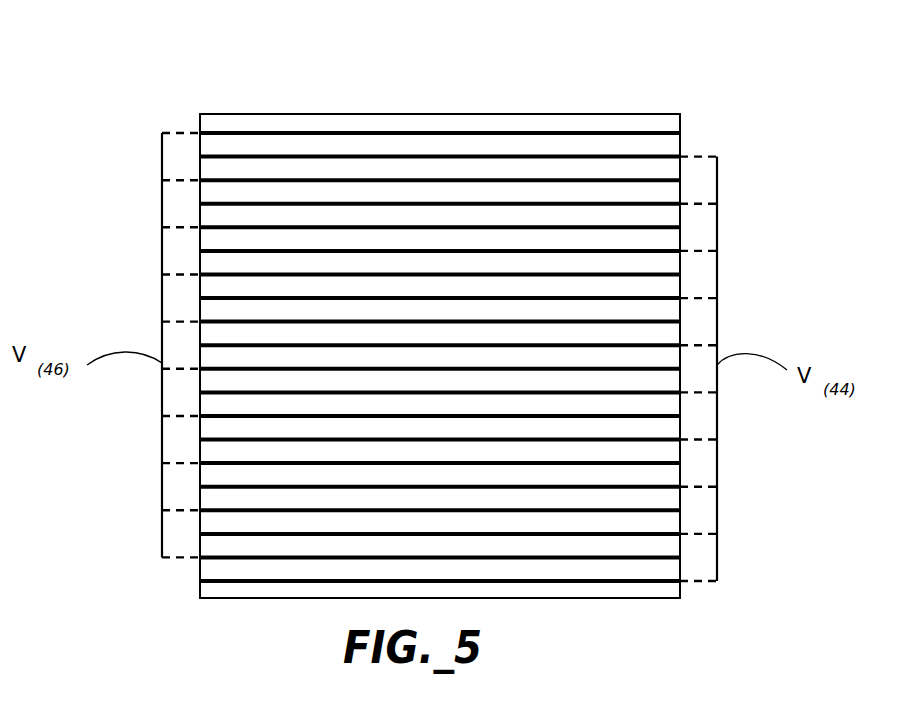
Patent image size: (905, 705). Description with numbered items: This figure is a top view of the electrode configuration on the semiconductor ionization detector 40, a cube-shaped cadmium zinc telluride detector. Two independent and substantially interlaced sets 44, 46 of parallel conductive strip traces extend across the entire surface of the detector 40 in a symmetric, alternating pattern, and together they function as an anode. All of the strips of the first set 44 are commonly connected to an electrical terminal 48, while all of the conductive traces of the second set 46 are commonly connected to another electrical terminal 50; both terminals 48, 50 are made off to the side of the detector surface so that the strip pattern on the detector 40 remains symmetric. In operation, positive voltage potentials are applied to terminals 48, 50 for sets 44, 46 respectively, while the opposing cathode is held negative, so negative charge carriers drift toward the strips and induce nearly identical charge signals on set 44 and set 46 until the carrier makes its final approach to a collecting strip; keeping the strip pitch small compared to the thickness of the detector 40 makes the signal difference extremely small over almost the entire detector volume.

The semiconductor ionization detector 40 is at (253, 78).
The set of conductive strip traces 44 is at (653, 537).
The set of conductive strip traces 46 is at (217, 512).
The electrical terminal 48 is at (717, 270).
The electrical terminal 50 is at (162, 450).